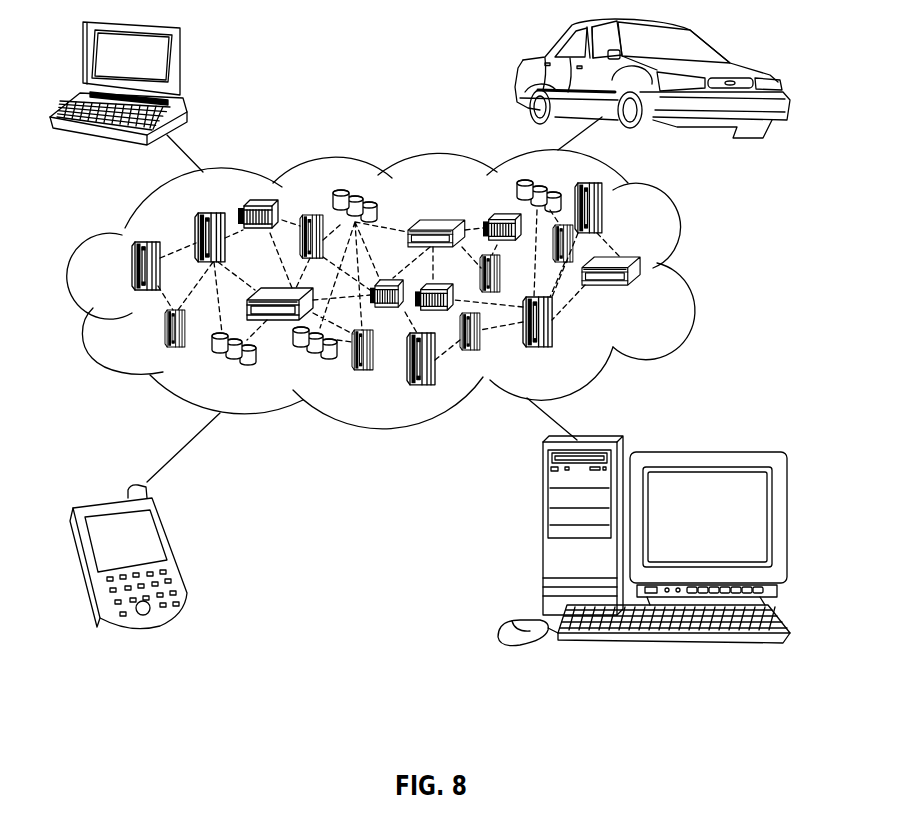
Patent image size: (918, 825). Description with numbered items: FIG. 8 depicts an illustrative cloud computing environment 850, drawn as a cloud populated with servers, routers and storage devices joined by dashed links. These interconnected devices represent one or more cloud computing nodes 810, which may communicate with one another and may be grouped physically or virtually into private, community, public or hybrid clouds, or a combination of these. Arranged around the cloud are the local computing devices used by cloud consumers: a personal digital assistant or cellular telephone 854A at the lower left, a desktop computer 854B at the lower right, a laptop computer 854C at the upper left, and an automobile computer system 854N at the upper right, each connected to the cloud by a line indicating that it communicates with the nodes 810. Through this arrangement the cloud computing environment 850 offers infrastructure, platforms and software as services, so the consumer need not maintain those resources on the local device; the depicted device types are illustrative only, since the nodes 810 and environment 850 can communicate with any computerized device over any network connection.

The cloud computing nodes 810 is at (662, 290).
The cloud computing environment 850 is at (678, 240).
The personal digital assistant or cellular telephone 854A is at (172, 548).
The desktop computer 854B is at (543, 535).
The laptop computer 854C is at (182, 63).
The automobile computer system 854N is at (520, 72).